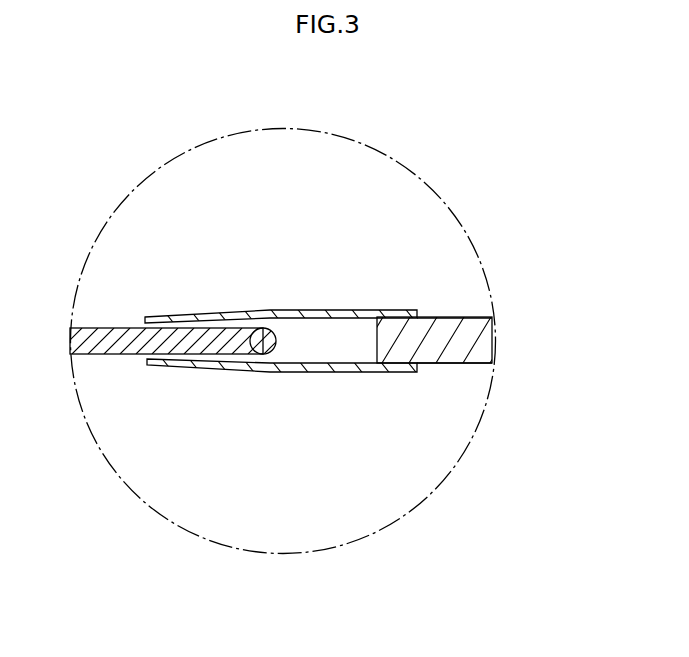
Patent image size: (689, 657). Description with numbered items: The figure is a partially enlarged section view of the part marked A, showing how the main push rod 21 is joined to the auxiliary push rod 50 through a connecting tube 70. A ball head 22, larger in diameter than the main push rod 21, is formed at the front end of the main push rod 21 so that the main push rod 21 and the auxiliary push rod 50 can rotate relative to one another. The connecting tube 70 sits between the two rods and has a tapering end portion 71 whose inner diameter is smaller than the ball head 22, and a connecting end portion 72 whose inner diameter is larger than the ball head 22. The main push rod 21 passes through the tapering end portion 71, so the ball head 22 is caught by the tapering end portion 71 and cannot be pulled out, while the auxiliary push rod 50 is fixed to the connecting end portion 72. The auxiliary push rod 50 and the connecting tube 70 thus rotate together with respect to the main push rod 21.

The main push rod 21 is at (110, 354).
The ball head 22 is at (265, 356).
The auxiliary push rod 50 is at (458, 369).
The connecting tube 70 is at (312, 228).
The tapering end portion 71 is at (208, 316).
The connecting end portion 72 is at (365, 310).
The enlarged part A is at (463, 224).